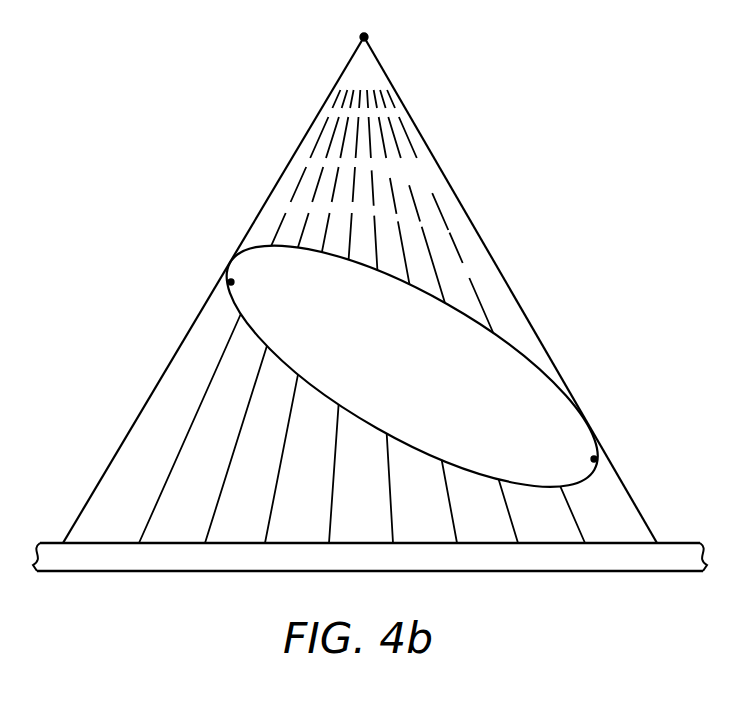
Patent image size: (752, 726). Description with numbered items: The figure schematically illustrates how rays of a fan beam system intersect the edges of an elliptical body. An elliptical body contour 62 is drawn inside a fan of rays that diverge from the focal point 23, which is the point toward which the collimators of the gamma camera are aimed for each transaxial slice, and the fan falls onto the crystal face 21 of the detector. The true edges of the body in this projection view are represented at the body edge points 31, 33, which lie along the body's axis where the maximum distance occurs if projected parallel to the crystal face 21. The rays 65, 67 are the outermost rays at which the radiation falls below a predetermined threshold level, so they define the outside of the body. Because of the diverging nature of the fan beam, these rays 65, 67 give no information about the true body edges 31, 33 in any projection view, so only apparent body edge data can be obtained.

The focal point 23 is at (366, 36).
The ray 67 is at (278, 185).
The ray 65 is at (456, 189).
The elliptical body contour 62 is at (230, 291).
The body edge point 33 is at (233, 283).
The body edge point 31 is at (593, 459).
The crystal face 21 is at (679, 543).